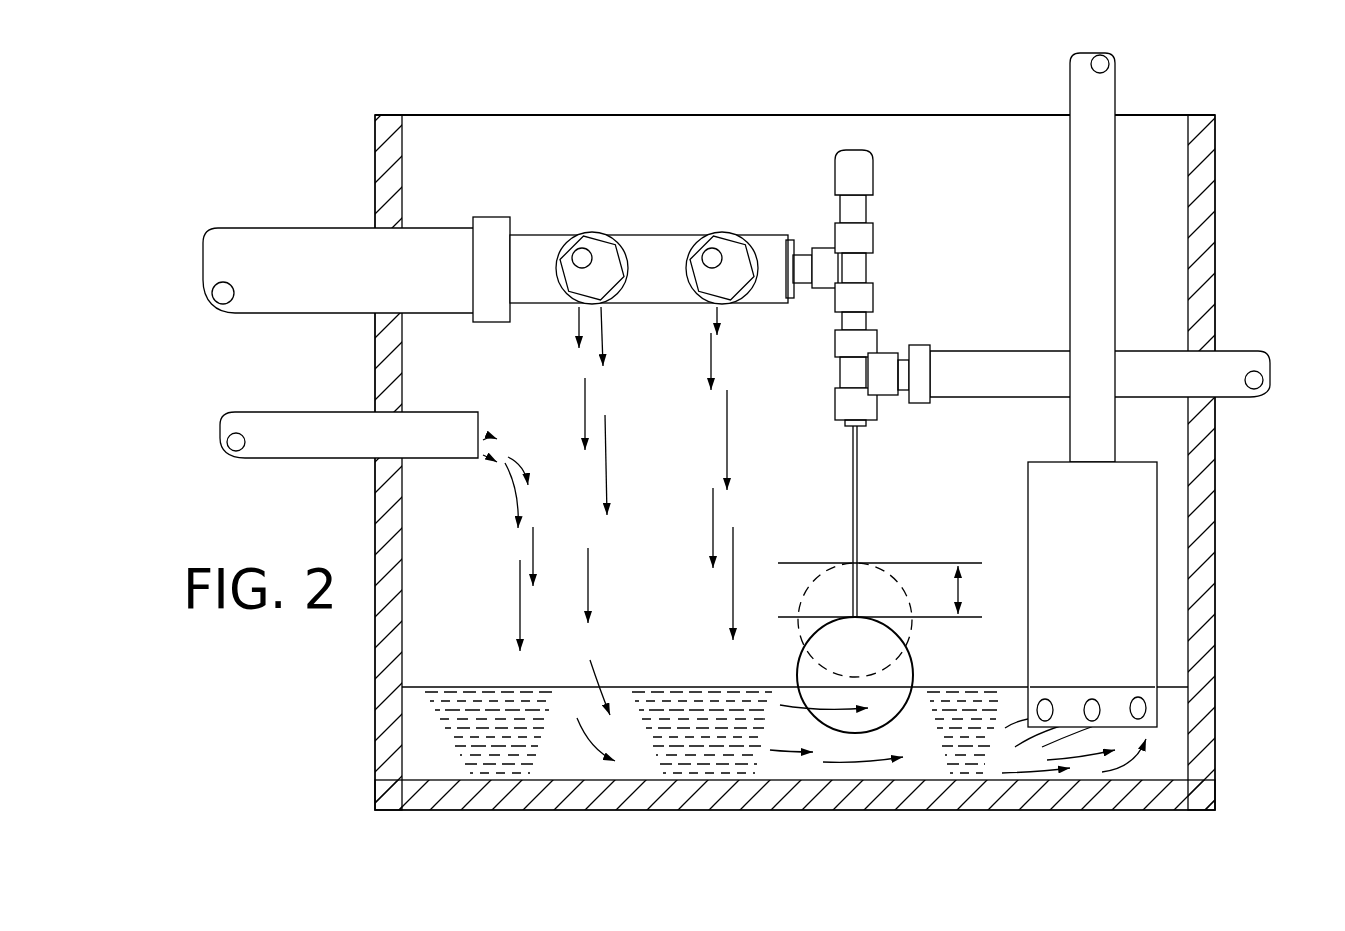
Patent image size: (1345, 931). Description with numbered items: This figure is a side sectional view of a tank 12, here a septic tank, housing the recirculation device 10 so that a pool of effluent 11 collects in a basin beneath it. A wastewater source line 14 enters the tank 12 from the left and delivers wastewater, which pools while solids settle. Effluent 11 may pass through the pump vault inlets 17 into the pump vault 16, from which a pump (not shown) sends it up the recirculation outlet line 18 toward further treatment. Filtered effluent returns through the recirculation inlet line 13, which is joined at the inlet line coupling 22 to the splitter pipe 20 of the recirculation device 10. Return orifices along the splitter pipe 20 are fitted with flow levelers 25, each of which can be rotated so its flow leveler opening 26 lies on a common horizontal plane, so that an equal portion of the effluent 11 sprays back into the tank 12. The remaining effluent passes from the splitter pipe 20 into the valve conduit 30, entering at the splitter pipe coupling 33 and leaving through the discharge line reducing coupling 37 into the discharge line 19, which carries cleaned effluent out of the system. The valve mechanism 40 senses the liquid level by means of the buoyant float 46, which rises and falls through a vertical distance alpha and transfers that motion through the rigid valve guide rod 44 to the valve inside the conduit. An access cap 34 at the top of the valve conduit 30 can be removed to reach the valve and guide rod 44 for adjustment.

The recirculation device 10 is at (775, 148).
The effluent 11 is at (420, 742).
The tank 12 is at (1218, 622).
The recirculation inlet line 13 is at (285, 232).
The wastewater source line 14 is at (310, 425).
The pump vault 16 is at (1040, 522).
The pump vault inlets 17 is at (1138, 696).
The recirculation outlet line 18 is at (1075, 225).
The discharge line 19 is at (1157, 375).
The splitter pipe 20 is at (525, 245).
The inlet line coupling 22 is at (492, 237).
The flow leveler 25 is at (608, 265).
The flow leveler opening 26 is at (578, 250).
The valve conduit 30 is at (868, 292).
The splitter pipe coupling 33 is at (826, 286).
The access cap 34 is at (868, 178).
The discharge line reducing coupling 37 is at (885, 358).
The valve mechanism 40 is at (828, 452).
The valve guide rod 44 is at (858, 475).
The float 46 is at (900, 678).